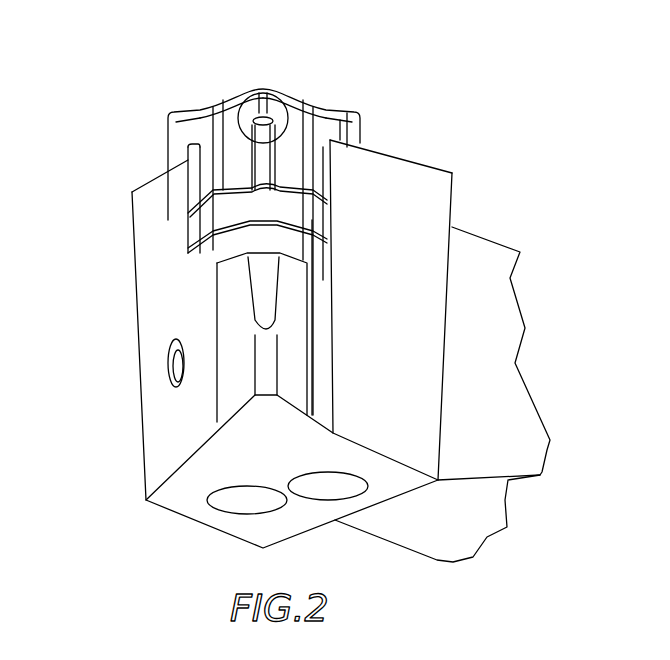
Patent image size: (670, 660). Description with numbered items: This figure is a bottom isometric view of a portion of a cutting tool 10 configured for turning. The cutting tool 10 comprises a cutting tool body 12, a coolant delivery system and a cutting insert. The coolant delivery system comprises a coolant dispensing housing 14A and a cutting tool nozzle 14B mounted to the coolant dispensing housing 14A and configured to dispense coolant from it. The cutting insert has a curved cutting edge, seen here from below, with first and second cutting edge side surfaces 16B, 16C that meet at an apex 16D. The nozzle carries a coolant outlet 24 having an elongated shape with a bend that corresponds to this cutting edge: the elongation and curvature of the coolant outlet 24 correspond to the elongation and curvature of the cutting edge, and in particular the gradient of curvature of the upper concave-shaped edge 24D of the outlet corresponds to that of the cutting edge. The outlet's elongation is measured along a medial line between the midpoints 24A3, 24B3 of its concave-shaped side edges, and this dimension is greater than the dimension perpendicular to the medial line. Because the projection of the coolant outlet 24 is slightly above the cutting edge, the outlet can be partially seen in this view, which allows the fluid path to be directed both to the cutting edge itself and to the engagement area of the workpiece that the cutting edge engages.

The cutting tool 10 is at (522, 158).
The cutting tool body 12 is at (108, 456).
The coolant dispensing housing 14A is at (302, 78).
The cutting tool nozzle 14B is at (300, 112).
The first cutting edge side surface 16B is at (245, 130).
The second cutting edge side surface 16C is at (272, 133).
The apex 16D is at (286, 143).
The coolant outlet 24 is at (263, 92).
The midpoint of concave-shaped side edge 24A3 is at (293, 118).
The midpoint of concave-shaped side edge 24B3 is at (257, 100).
The upper concave-shaped edge 24D is at (268, 98).